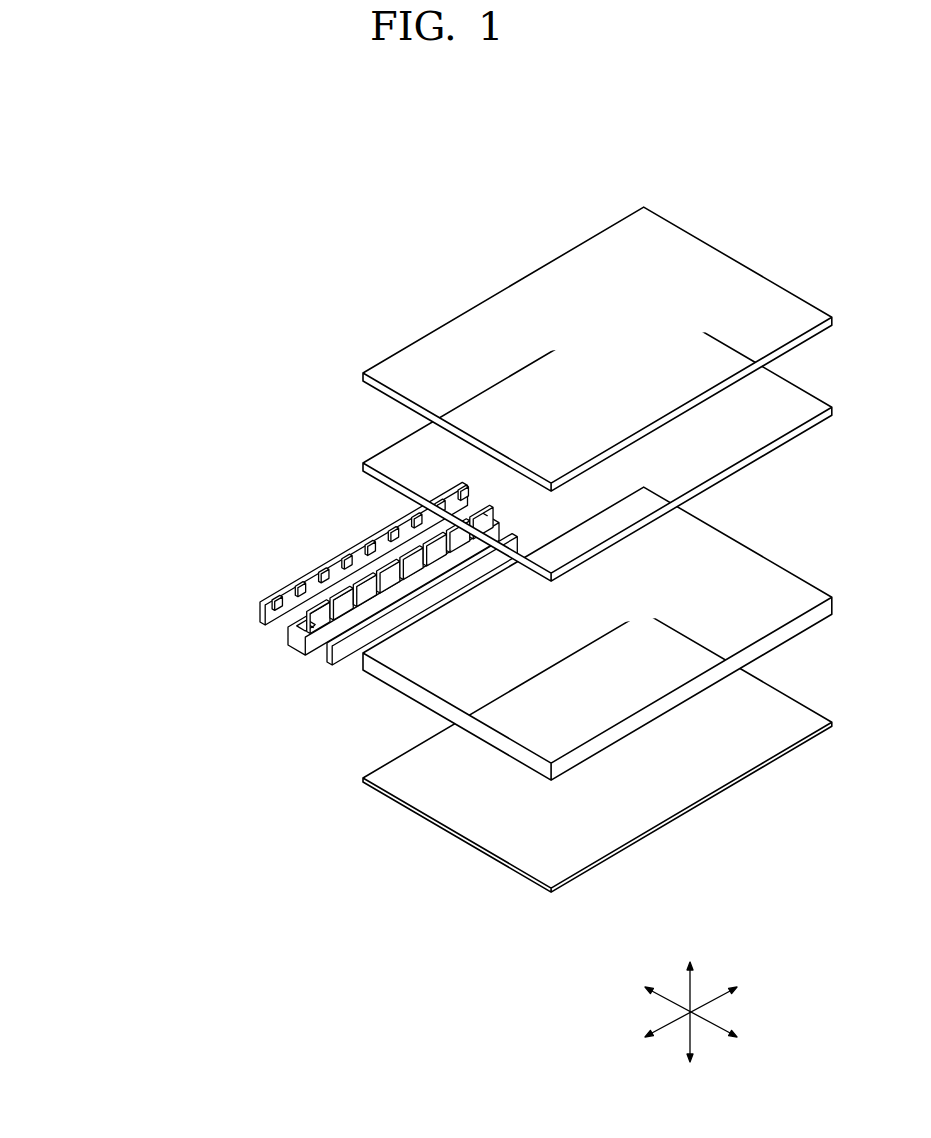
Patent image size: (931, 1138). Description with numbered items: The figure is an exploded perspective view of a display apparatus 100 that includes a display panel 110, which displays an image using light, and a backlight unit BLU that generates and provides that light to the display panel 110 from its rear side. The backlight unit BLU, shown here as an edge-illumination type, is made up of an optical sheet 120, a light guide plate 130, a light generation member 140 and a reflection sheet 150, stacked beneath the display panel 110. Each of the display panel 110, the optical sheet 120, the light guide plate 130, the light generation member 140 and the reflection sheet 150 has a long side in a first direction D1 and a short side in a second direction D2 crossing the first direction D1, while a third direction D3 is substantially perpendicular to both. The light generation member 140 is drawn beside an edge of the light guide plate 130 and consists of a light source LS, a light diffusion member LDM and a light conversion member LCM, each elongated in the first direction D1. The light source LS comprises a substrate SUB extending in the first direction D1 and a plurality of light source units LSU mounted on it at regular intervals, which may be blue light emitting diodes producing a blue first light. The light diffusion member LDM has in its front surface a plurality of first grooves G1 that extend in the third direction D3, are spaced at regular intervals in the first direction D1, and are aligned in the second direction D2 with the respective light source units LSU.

The display apparatus 100 is at (438, 521).
The display panel 110 is at (420, 345).
The optical sheet 120 is at (462, 439).
The light guide plate 130 is at (374, 666).
The light generation member 140 is at (305, 579).
The reflection sheet 150 is at (398, 777).
The backlight unit BLU is at (438, 594).
The light source LS is at (310, 553).
The light source unit LSU is at (278, 598).
The substrate SUB is at (263, 611).
The light diffusion member LDM is at (288, 629).
The light conversion member LCM is at (326, 650).
The first groove G1 is at (380, 572).
The first direction D1 is at (703, 1002).
The second direction D2 is at (703, 1022).
The third direction D3 is at (690, 998).